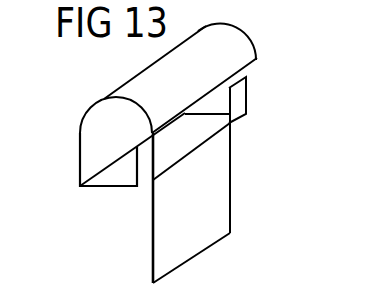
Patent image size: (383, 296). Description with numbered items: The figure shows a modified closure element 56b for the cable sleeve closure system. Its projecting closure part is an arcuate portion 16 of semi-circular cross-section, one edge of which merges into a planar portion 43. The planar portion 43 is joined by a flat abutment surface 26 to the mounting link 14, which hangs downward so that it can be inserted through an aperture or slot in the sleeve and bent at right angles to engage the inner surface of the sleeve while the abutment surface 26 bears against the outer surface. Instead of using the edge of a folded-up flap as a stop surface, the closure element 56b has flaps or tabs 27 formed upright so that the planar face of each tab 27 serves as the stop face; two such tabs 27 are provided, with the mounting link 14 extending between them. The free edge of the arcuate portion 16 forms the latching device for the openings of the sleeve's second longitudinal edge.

The mounting link 14 is at (223, 172).
The arcuate portion 16 is at (269, 44).
The flat abutment surface 26 is at (100, 180).
The tabs 27 is at (145, 170).
The planar portion 43 is at (56, 160).
The closure element 56b is at (136, 70).